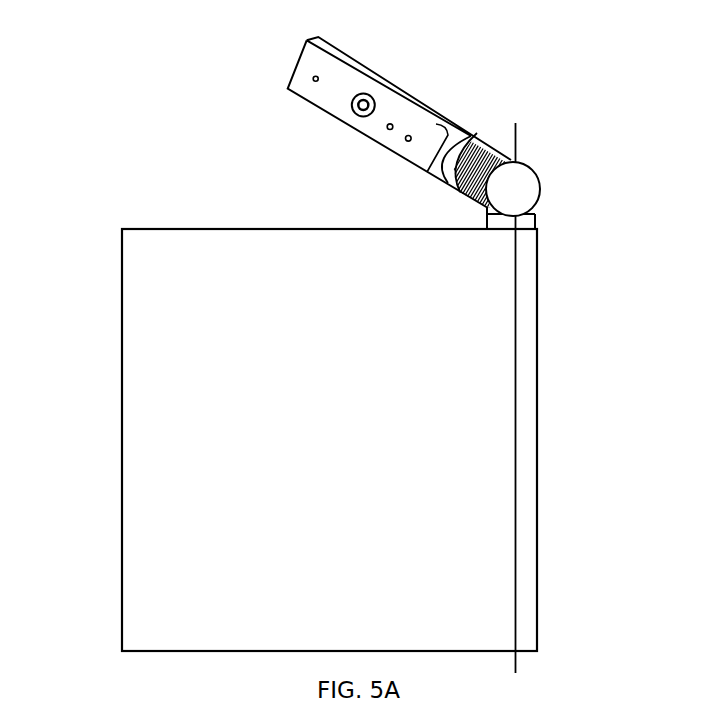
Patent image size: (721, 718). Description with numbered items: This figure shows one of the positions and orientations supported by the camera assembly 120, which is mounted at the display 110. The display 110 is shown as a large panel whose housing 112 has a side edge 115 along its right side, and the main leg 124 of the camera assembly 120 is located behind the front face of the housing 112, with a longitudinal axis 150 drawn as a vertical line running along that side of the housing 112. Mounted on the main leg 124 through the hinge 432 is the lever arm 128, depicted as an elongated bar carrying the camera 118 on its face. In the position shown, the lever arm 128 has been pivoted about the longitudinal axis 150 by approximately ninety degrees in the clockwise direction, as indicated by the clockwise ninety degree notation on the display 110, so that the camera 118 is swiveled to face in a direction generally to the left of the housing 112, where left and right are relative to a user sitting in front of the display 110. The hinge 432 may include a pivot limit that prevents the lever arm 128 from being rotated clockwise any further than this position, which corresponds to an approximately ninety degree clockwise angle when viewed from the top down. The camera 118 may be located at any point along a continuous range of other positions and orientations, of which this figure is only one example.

The display 110 is at (83, 561).
The housing 112 is at (180, 229).
The side edge 115 is at (344, 440).
The camera 118 is at (358, 115).
The camera assembly 120 is at (610, 307).
The main leg 124 is at (532, 225).
The lever arm 128 is at (392, 82).
The longitudinal axis 150 is at (517, 402).
The hinge 432 is at (530, 220).